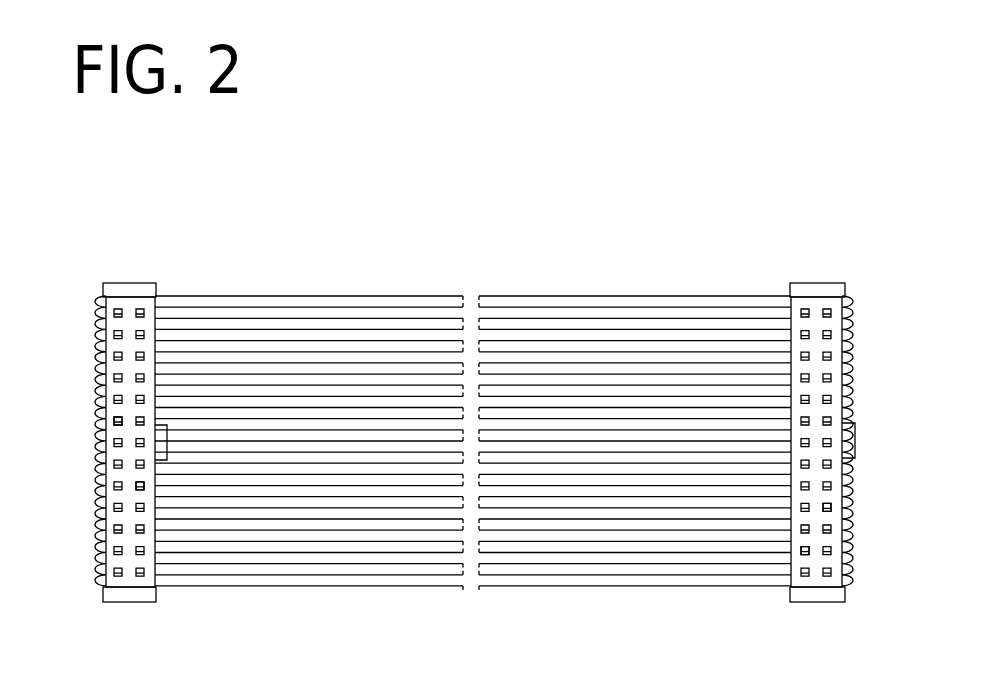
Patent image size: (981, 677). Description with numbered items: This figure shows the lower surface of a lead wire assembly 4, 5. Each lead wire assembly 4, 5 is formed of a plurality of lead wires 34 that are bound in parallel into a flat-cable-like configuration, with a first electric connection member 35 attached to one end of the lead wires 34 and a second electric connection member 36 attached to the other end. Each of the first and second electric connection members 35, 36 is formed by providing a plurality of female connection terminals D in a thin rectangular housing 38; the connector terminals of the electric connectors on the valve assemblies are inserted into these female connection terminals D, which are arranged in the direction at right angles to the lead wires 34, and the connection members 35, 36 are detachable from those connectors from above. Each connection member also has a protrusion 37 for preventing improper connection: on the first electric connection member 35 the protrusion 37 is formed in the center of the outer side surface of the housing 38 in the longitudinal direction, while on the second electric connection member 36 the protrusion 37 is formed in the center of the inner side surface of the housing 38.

The lead wire assembly 4 is at (477, 393).
The lead wire assembly 5 is at (602, 171).
The lead wires 34 is at (320, 360).
The first electric connection member 35 is at (816, 292).
The second electric connection member 36 is at (129, 292).
The protrusion 37 is at (845, 442).
The housing 38 is at (115, 325).
The female connection terminals D is at (140, 483).